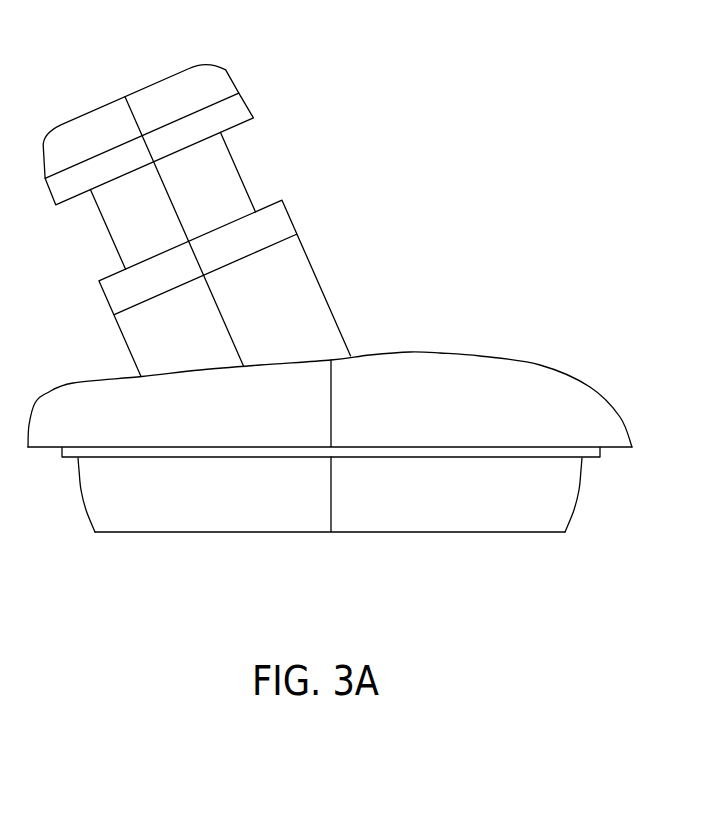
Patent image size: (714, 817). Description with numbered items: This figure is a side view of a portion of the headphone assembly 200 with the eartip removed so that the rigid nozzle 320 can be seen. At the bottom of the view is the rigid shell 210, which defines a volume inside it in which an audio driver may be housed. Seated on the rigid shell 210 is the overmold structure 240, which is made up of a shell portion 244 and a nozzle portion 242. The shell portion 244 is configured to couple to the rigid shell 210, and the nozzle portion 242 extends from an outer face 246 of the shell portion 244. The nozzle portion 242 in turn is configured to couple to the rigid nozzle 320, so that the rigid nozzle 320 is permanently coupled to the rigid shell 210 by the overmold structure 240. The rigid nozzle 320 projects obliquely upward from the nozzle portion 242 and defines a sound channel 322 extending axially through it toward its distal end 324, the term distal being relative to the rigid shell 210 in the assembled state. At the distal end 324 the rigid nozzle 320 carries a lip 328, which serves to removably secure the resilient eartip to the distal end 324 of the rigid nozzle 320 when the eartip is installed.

The headphone assembly 200 is at (413, 89).
The rigid shell 210 is at (580, 497).
The overmold structure 240 is at (478, 283).
The nozzle portion 242 is at (298, 288).
The shell portion 244 is at (433, 367).
The outer face 246 is at (390, 353).
The rigid nozzle 320 is at (116, 248).
The sound channel 322 is at (123, 94).
The distal end 324 is at (195, 65).
The lip 328 is at (235, 127).